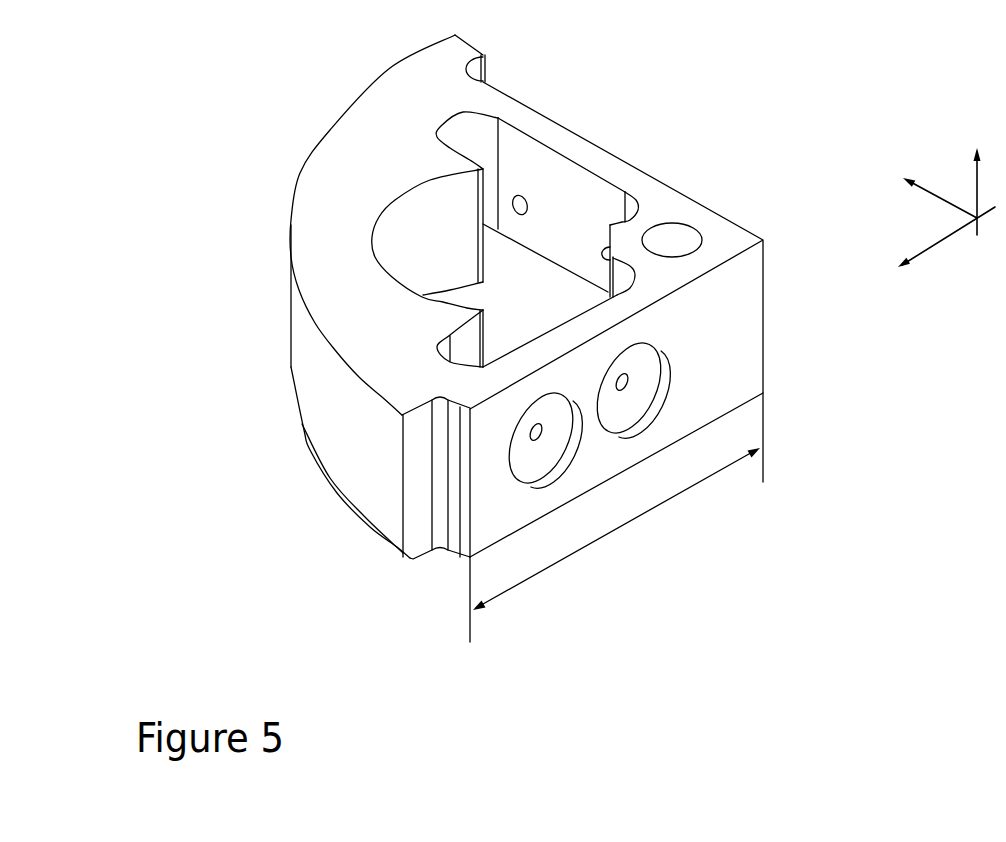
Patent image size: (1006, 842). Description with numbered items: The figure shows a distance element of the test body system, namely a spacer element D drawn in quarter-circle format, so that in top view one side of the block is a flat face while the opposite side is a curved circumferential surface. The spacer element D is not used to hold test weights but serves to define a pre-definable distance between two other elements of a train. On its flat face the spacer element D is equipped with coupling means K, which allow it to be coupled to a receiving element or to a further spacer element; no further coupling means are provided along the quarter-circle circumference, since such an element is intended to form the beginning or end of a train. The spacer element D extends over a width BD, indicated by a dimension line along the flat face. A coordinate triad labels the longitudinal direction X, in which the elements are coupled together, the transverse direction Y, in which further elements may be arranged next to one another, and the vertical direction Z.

The spacer element D is at (296, 365).
The coupling means K is at (676, 412).
The width of spacer element BD is at (538, 580).
The longitudinal direction X is at (917, 185).
The transverse direction Y is at (946, 257).
The vertical direction Z is at (963, 165).